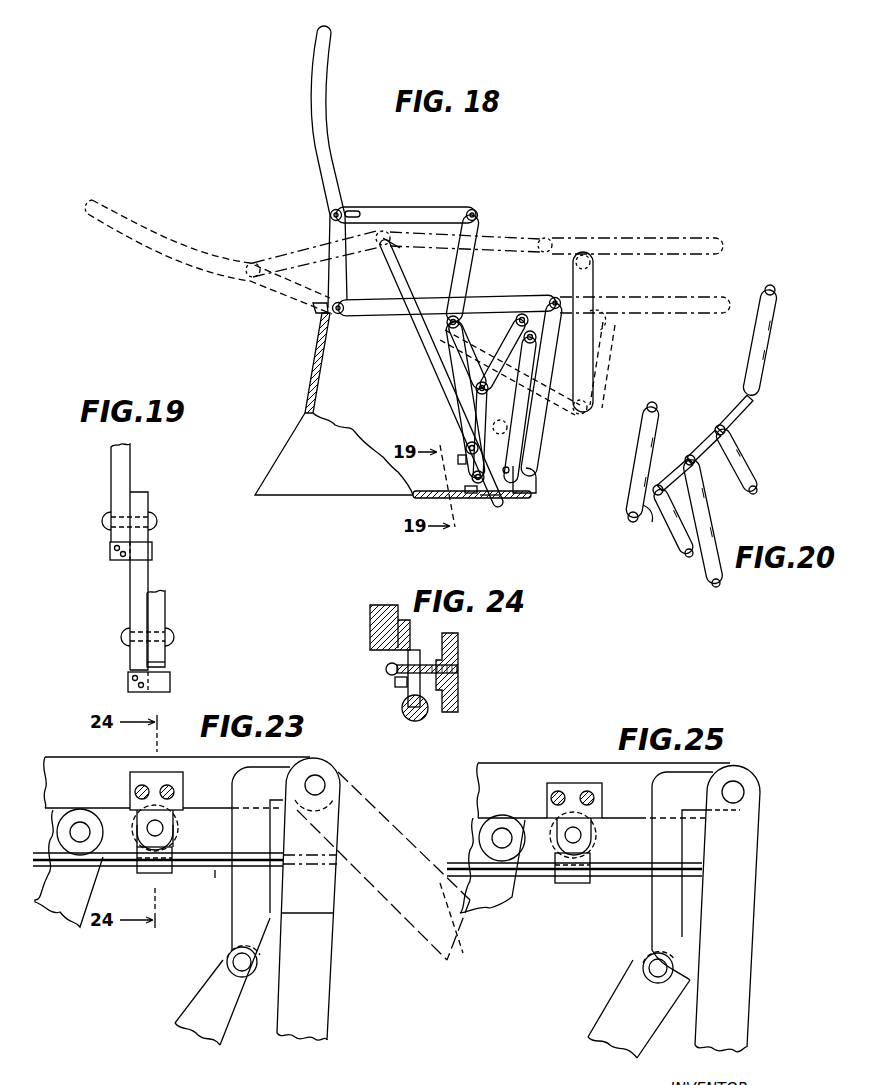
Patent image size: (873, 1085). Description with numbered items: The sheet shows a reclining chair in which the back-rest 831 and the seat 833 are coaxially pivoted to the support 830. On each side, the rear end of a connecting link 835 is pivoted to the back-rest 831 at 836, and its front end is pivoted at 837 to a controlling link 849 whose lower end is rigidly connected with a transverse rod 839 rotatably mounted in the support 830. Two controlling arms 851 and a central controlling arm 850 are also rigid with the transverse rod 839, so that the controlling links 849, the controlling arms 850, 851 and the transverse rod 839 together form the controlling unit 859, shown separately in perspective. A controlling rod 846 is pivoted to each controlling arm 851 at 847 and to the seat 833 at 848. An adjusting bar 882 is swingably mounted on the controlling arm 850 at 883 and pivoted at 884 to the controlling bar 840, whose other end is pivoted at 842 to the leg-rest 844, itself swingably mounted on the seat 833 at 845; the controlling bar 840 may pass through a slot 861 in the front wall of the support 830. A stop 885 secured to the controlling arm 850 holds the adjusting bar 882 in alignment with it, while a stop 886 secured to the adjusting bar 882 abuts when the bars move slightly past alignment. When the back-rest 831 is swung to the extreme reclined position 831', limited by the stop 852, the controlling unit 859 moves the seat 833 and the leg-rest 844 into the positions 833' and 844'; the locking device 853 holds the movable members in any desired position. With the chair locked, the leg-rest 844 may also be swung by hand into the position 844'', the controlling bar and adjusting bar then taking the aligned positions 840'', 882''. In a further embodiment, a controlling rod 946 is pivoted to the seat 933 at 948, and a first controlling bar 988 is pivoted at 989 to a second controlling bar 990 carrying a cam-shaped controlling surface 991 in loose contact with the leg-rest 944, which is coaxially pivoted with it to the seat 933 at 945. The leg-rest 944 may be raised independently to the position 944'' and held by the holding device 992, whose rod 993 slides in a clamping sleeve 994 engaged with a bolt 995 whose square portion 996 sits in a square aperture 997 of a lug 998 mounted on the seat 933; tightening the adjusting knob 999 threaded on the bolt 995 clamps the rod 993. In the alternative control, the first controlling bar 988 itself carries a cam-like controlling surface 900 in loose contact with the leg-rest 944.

In FIG. 18, the back-rest 831 is at (339, 167).
In FIG. 18, the extreme reclined position of back-rest 831' is at (208, 253).
In FIG. 18, the support 830 is at (308, 369).
In FIG. 18, the seat 833 is at (447, 290).
In FIG. 18, the position of seat 833' is at (413, 238).
In FIG. 18, the connecting link 835 is at (393, 207).
In FIG. 18, the pivot 836 is at (330, 212).
In FIG. 18, the pivot 837 is at (473, 210).
In FIG. 20, the transverse rod 839 is at (648, 520).
In FIG. 18, the controlling bar 840 is at (544, 407).
In FIG. 19, the controlling bar 840 is at (180, 628).
In FIG. 18, the position of controlling bar 840'' is at (628, 359).
In FIG. 18, the pivot 842 is at (548, 300).
In FIG. 18, the leg-rest 844 is at (549, 483).
In FIG. 18, the position of leg-rest 844' is at (630, 230).
In FIG. 18, the position of leg-rest 844'' is at (645, 294).
In FIG. 18, the pivot 845 is at (585, 296).
In FIG. 18, the controlling rod 846 is at (470, 403).
In FIG. 18, the pivot 847 is at (476, 389).
In FIG. 18, the pivot 848 is at (516, 316).
In FIG. 18, the controlling link 849 is at (482, 232).
In FIG. 20, the controlling link 849 is at (778, 318).
In FIG. 18, the controlling arm 850 is at (465, 421).
In FIG. 20, the controlling arm 850 is at (720, 535).
In FIG. 19, the controlling arm 850 is at (113, 473).
In FIG. 18, the controlling arm 851 is at (462, 370).
In FIG. 20, the controlling arm 851 is at (752, 453).
In FIG. 18, the stop 852 is at (312, 306).
In FIG. 18, the locking device 853 is at (352, 210).
In FIG. 18, the controlling unit 859 is at (455, 250).
In FIG. 20, the controlling unit 859 is at (715, 437).
In FIG. 18, the slot 861 is at (510, 470).
In FIG. 18, the adjusting element or bar 882 is at (422, 373).
In FIG. 19, the adjusting element or bar 882 is at (164, 581).
In FIG. 18, the position of adjusting bar 882'' is at (516, 384).
In FIG. 18, the pivot 883 is at (466, 447).
In FIG. 19, the pivot 883 is at (140, 515).
In FIG. 18, the pivot 884 is at (486, 497).
In FIG. 19, the pivot 884 is at (170, 642).
In FIG. 18, the stop 885 is at (457, 460).
In FIG. 19, the stop 885 is at (153, 550).
In FIG. 18, the stop 886 is at (465, 496).
In FIG. 19, the stop 886 is at (170, 683).
In FIG. 25, the cam-like controlling surface 900 is at (700, 985).
In FIG. 24, the seat 933 is at (370, 626).
In FIG. 23, the seat 933 is at (196, 765).
In FIG. 25, the seat 933 is at (584, 765).
In FIG. 23, the leg-rest 944 is at (335, 912).
In FIG. 25, the leg-rest 944 is at (748, 922).
In FIG. 23, the elevated position of leg-rest 944'' is at (383, 866).
In FIG. 23, the pivot 945 is at (325, 785).
In FIG. 25, the pivot 945 is at (738, 790).
In FIG. 23, the controlling rod 946 is at (60, 925).
In FIG. 25, the controlling rod 946 is at (498, 888).
In FIG. 23, the pivot 948 is at (78, 830).
In FIG. 25, the pivot 948 is at (507, 832).
In FIG. 23, the first controlling bar 988 is at (200, 990).
In FIG. 25, the first controlling bar 988 is at (615, 1000).
In FIG. 23, the pivot 989 is at (233, 962).
In FIG. 25, the pivot 989 is at (650, 968).
In FIG. 23, the second controlling bar 990 is at (232, 915).
In FIG. 25, the second controlling bar 990 is at (648, 915).
In FIG. 23, the controlling surface 991 is at (338, 915).
In FIG. 23, the holding device 992 is at (215, 870).
In FIG. 25, the holding device 992 is at (618, 880).
In FIG. 24, the rod 993 is at (405, 705).
In FIG. 23, the rod 993 is at (112, 868).
In FIG. 24, the clamping sleeve 994 is at (428, 716).
In FIG. 23, the clamping sleeve 994 is at (155, 875).
In FIG. 24, the bolt 995 is at (458, 665).
In FIG. 23, the bolt 995 is at (152, 826).
In FIG. 24, the square portion 996 is at (395, 681).
In FIG. 24, the square aperture 997 is at (388, 665).
In FIG. 24, the lug 998 is at (400, 620).
In FIG. 23, the lug 998 is at (178, 815).
In FIG. 25, the lug 998 is at (574, 833).
In FIG. 24, the adjusting knob 999 is at (460, 694).
In FIG. 23, the adjusting knob 999 is at (185, 833).